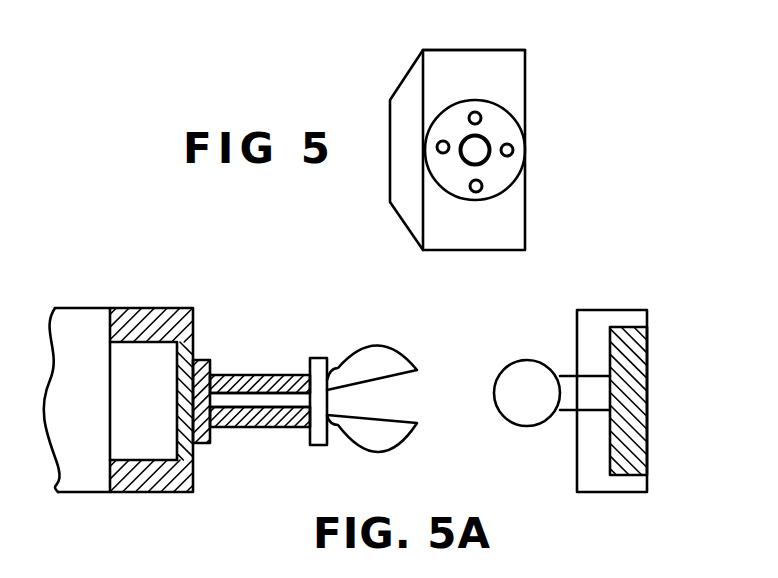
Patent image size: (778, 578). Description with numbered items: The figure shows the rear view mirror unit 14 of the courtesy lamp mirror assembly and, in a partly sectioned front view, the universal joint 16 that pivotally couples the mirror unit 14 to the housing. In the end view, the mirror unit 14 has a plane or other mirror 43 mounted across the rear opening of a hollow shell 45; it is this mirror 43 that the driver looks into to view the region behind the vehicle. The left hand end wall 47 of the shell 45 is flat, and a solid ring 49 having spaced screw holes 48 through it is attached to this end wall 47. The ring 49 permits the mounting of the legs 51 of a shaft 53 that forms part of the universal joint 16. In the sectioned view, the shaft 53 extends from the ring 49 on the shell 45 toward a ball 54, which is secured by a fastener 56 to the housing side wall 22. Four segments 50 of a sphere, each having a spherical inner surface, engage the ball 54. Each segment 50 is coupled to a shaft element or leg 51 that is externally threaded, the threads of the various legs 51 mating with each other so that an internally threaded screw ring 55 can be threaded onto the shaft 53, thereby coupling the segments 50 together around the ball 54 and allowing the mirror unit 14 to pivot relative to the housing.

In FIG. 5, the rear view mirror unit 14 is at (388, 78).
In FIG. 5A, the rear view mirror unit 14 is at (162, 302).
In FIG. 5A, the universal joint 16 is at (286, 443).
In FIG. 5A, the housing side wall 22 is at (628, 350).
In FIG. 5, the mirror 43 is at (498, 213).
In FIG. 5, the hollow shell 45 is at (474, 190).
In FIG. 5A, the hollow shell 45 is at (67, 335).
In FIG. 5, the left hand end wall 47 is at (447, 73).
In FIG. 5, the screw holes 48 is at (480, 113).
In FIG. 5, the solid ring 49 is at (493, 175).
In FIG. 5A, the solid ring 49 is at (205, 357).
In FIG. 5A, the segments 50 is at (380, 368).
In FIG. 5A, the legs 51 is at (215, 373).
In FIG. 5A, the shaft 53 is at (275, 371).
In FIG. 5A, the ball 54 is at (521, 403).
In FIG. 5A, the screw ring 55 is at (317, 365).
In FIG. 5A, the fastener 56 is at (594, 394).